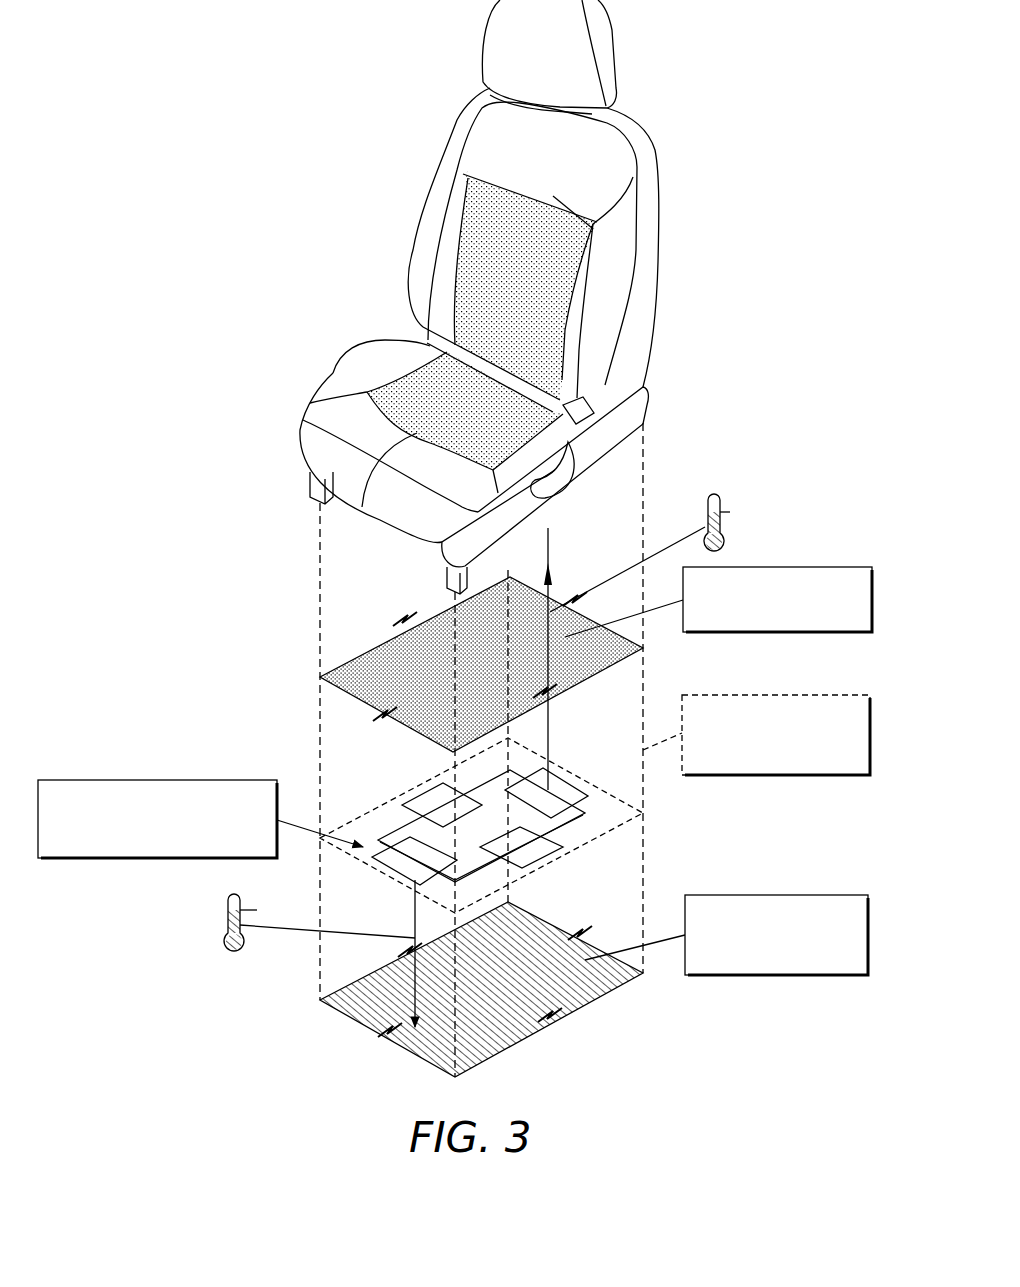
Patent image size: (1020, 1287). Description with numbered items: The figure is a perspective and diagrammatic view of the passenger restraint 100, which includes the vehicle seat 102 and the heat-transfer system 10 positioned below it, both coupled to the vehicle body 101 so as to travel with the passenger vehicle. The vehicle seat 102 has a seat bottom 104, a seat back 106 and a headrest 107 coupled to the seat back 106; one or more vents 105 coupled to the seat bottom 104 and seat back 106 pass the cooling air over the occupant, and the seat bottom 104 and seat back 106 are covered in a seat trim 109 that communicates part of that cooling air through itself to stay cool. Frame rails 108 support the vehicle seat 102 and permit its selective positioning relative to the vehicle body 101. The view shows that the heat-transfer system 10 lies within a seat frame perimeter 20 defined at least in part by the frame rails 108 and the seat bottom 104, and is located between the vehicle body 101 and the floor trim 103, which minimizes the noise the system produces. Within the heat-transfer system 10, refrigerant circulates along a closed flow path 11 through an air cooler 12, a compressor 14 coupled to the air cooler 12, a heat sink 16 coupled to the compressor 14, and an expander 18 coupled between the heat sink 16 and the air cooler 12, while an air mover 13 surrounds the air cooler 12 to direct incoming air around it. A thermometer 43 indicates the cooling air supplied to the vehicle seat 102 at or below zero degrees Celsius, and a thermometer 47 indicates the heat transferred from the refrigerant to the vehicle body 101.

The passenger restraint 100 is at (742, 90).
The vehicle seat 102 is at (420, 172).
The seat bottom 104 is at (323, 427).
The vents 105 is at (533, 94).
The seat back 106 is at (592, 170).
The headrest 107 is at (572, 60).
The frame rails 108 is at (318, 483).
The seat trim 109 is at (433, 388).
The thermometer 43 is at (718, 500).
The thermometer 47 is at (228, 906).
The heat-transfer system 10 is at (90, 780).
The floor trim 103 is at (805, 567).
The seat frame perimeter 20 is at (815, 695).
The vehicle body 101 is at (805, 895).
The flow path 11 is at (562, 833).
The air cooler 12 is at (570, 752).
The air mover 13 is at (558, 808).
The compressor 14 is at (545, 862).
The heat sink 16 is at (390, 880).
The expander 18 is at (420, 790).